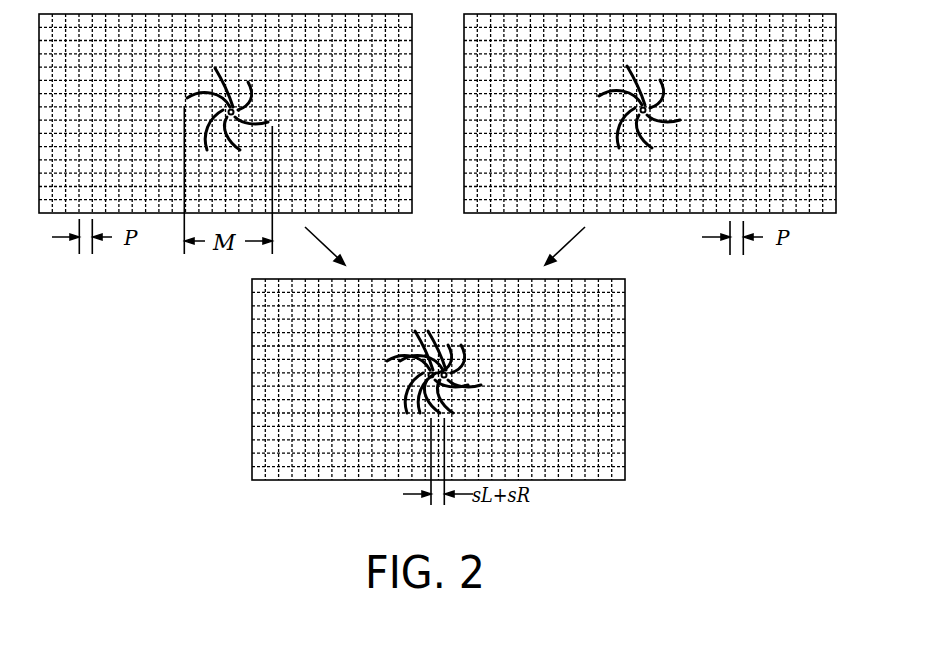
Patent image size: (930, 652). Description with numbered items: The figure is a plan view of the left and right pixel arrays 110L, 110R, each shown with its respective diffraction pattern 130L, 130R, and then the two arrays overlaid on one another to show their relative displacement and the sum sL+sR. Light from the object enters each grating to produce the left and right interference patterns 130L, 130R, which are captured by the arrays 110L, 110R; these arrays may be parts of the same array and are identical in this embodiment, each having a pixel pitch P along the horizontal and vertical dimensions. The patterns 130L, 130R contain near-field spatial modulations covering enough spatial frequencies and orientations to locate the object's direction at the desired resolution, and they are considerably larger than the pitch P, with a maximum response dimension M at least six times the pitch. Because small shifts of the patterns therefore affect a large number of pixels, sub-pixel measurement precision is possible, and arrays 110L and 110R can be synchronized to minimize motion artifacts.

The left array 110L is at (371, 76).
The right array 110R is at (796, 72).
The left interference pattern 130L is at (268, 118).
The right interference pattern 130R is at (673, 117).